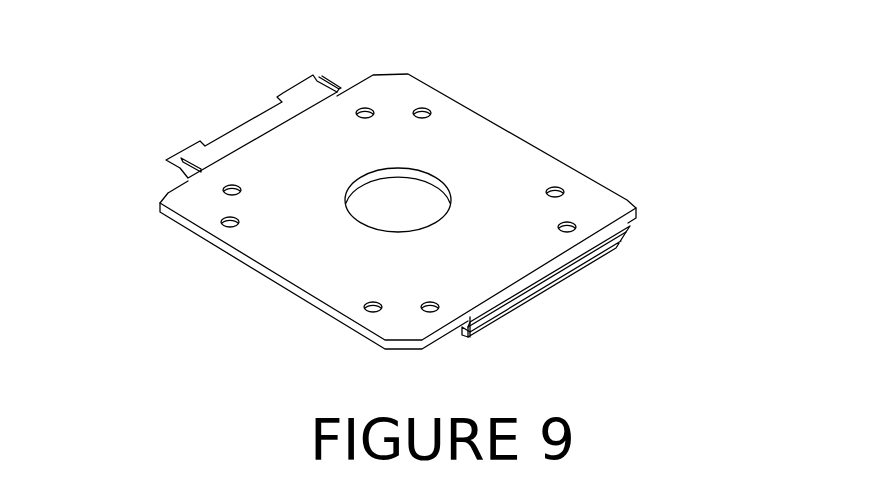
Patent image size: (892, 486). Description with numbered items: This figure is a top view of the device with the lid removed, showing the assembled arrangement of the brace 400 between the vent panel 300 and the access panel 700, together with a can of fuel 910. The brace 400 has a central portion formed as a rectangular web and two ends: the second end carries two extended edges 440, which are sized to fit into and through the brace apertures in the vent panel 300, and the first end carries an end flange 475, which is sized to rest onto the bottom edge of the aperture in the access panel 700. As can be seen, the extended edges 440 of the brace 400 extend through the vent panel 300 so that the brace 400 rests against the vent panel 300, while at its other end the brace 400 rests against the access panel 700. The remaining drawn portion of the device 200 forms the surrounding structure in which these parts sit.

The base plate assembly 200 is at (375, 211).
The vent panel 300 is at (172, 188).
The brace 400 is at (402, 206).
The extended edges 440 is at (298, 82).
The end flange 475 is at (520, 307).
The access panel 700 is at (628, 232).
The can of fuel 910 is at (425, 170).